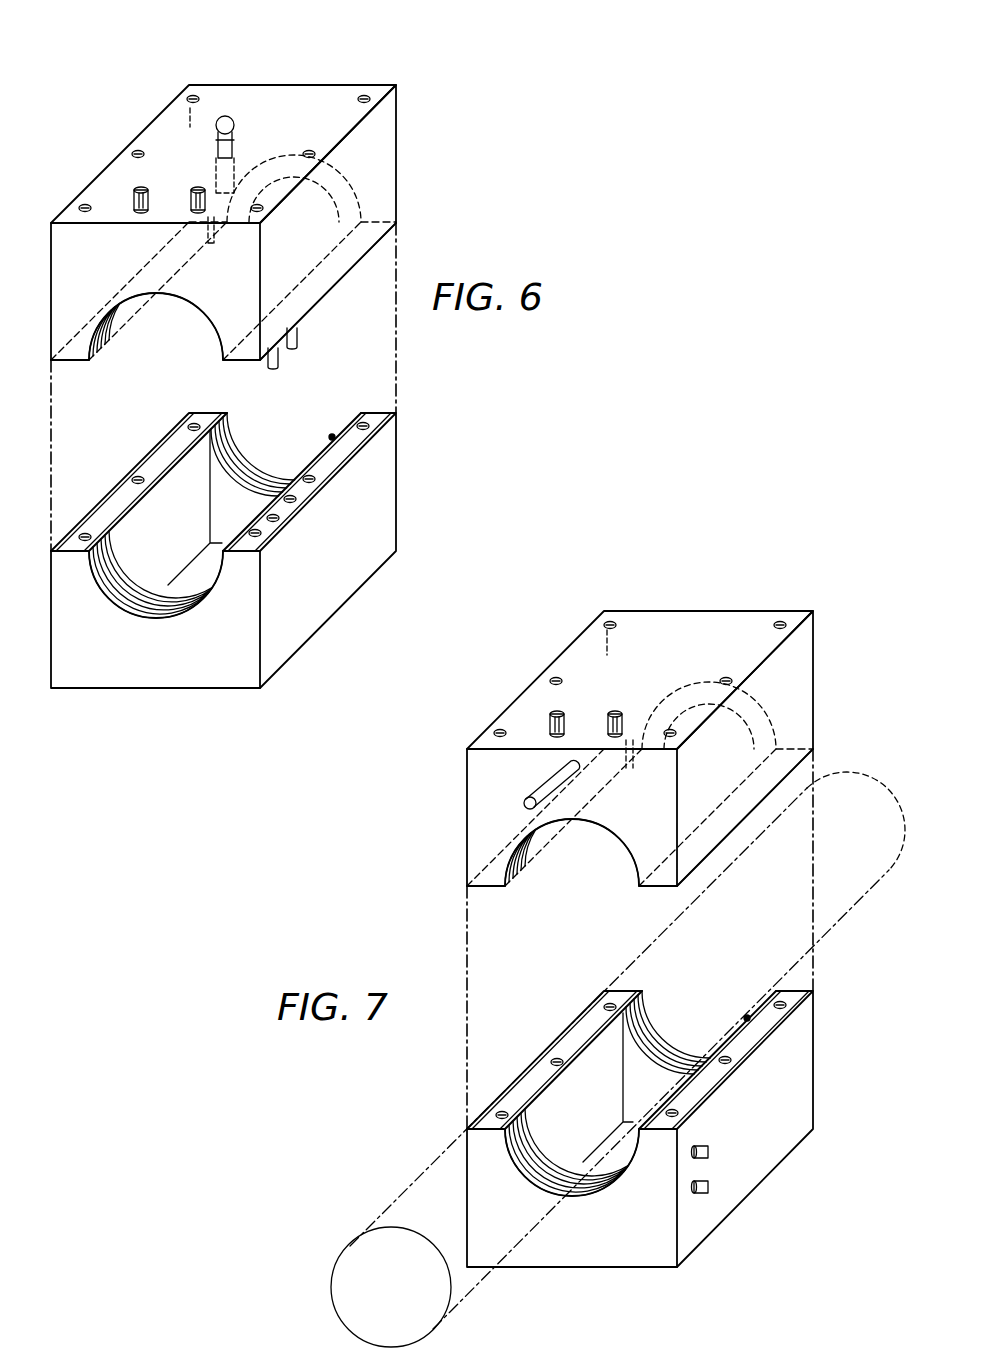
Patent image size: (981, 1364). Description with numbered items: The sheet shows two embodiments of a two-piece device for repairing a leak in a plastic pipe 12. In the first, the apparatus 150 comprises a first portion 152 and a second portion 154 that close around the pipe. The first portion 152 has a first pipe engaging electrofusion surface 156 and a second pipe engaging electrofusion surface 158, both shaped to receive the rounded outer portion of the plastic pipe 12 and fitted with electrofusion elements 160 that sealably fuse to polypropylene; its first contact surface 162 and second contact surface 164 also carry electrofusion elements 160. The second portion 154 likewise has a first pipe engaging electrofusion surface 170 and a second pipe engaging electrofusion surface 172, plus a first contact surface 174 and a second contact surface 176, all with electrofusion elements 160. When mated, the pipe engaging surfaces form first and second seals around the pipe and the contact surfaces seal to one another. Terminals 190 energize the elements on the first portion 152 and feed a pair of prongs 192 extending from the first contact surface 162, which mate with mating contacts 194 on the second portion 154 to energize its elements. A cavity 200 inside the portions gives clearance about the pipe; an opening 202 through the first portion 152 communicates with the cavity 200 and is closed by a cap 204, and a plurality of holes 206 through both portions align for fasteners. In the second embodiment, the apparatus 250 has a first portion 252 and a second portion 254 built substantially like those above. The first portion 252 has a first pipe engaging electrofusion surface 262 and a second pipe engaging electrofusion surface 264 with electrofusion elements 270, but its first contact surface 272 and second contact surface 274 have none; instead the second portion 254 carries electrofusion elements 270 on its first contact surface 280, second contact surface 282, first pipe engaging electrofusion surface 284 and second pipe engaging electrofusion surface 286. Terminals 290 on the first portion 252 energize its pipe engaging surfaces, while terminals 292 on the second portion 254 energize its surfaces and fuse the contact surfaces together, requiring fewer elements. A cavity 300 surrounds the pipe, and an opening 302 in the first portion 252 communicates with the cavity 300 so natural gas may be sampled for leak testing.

In FIG. 6, the apparatus 150 is at (128, 62).
In FIG. 6, the first portion 152 is at (385, 192).
In FIG. 6, the second portion 154 is at (372, 560).
In FIG. 6, the first pipe engaging electrofusion surface 156 is at (178, 304).
In FIG. 6, the second pipe engaging electrofusion surface 158 is at (341, 208).
In FIG. 6, the electrofusion elements 160 is at (100, 352).
In FIG. 6, the first contact surface 162 is at (342, 279).
In FIG. 6, the second contact surface 164 is at (68, 364).
In FIG. 6, the first pipe engaging electrofusion surface 170 is at (150, 617).
In FIG. 6, the second pipe engaging electrofusion surface 172 is at (240, 426).
In FIG. 6, the first contact surface 174 is at (332, 434).
In FIG. 6, the second contact surface 176 is at (120, 492).
In FIG. 6, the terminals 190 is at (138, 186).
In FIG. 6, the prongs 192 is at (300, 334).
In FIG. 6, the mating contacts 194 is at (293, 520).
In FIG. 6, the cavity 200 is at (200, 568).
In FIG. 6, the opening 202 is at (243, 140).
In FIG. 6, the cap 204 is at (228, 114).
In FIG. 6, the holes 206 is at (192, 96).
In FIG. 7, the holes 206 is at (640, 870).
In FIG. 7, the apparatus 250 is at (675, 587).
In FIG. 7, the first portion 252 is at (803, 650).
In FIG. 7, the second portion 254 is at (802, 1065).
In FIG. 7, the first pipe engaging electrofusion surface 262 is at (518, 872).
In FIG. 7, the second pipe engaging electrofusion surface 264 is at (686, 680).
In FIG. 7, the electrofusion elements 270 is at (760, 727).
In FIG. 7, the first contact surface 272 is at (733, 838).
In FIG. 7, the second contact surface 274 is at (486, 888).
In FIG. 7, the first contact surface 280 is at (733, 1072).
In FIG. 7, the second contact surface 282 is at (587, 1013).
In FIG. 7, the first pipe engaging electrofusion surface 284 is at (506, 1150).
In FIG. 7, the second pipe engaging electrofusion surface 286 is at (654, 1012).
In FIG. 7, the terminals 290 is at (555, 712).
In FIG. 7, the terminals 292 is at (710, 1187).
In FIG. 7, the cavity 300 is at (612, 1137).
In FIG. 7, the opening 302 is at (555, 778).
In FIG. 7, the plastic pipe 12 is at (842, 780).